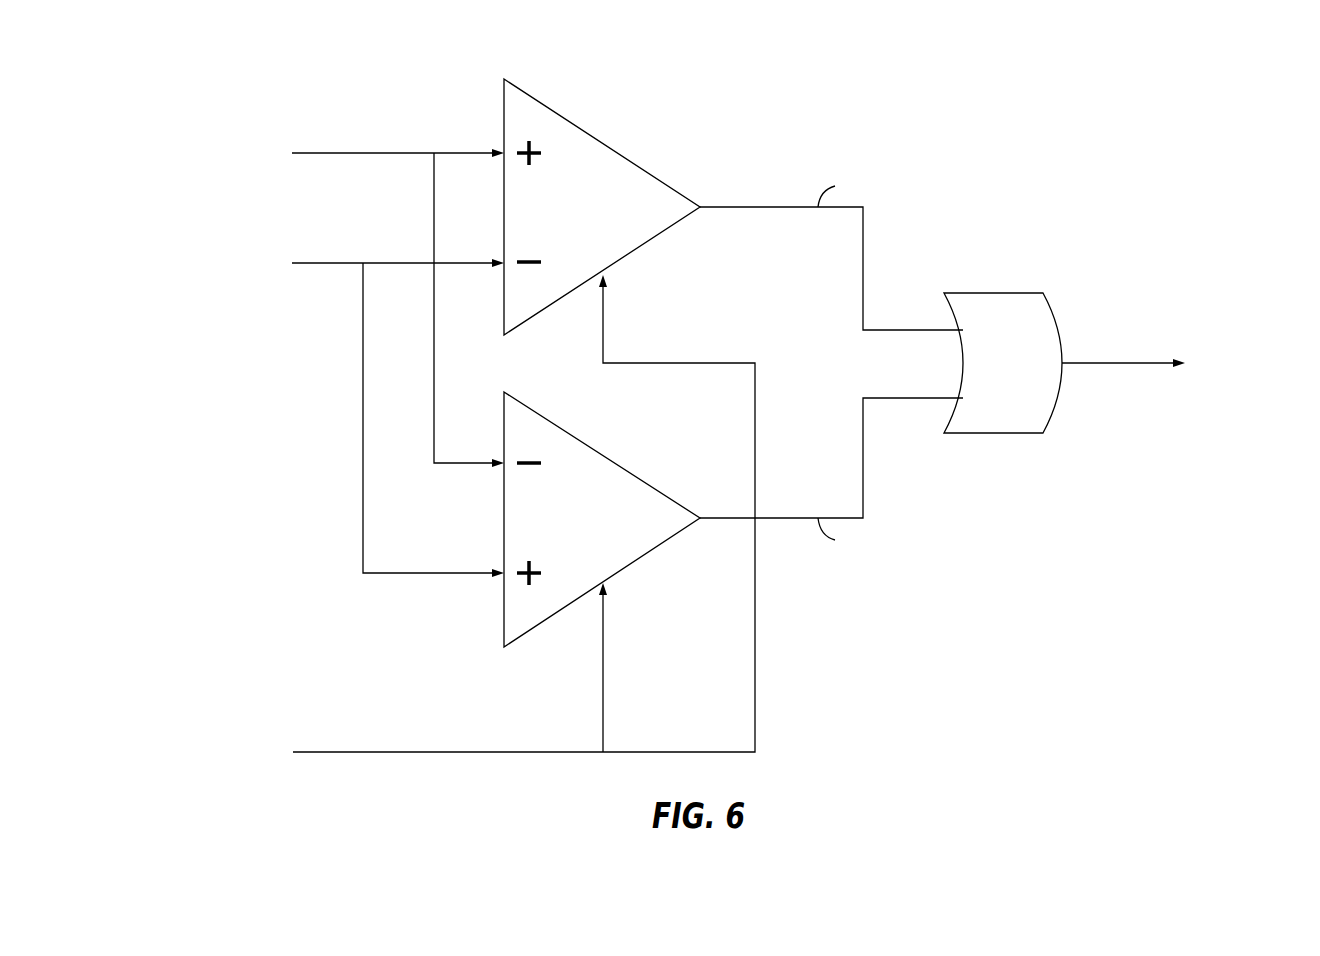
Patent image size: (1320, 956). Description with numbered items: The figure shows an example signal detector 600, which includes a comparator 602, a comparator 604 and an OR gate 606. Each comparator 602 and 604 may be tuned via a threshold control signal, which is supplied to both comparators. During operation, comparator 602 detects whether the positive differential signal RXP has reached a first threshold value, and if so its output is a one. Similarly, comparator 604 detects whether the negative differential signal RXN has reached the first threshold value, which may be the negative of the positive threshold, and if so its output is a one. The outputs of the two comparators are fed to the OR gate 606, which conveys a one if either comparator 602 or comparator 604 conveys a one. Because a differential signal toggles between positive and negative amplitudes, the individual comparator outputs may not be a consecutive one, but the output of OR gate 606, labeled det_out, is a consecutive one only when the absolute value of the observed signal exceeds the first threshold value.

The signal detector 600 is at (1163, 80).
The comparator 602 is at (590, 236).
The comparator 604 is at (590, 547).
The OR gate 606 is at (1028, 376).